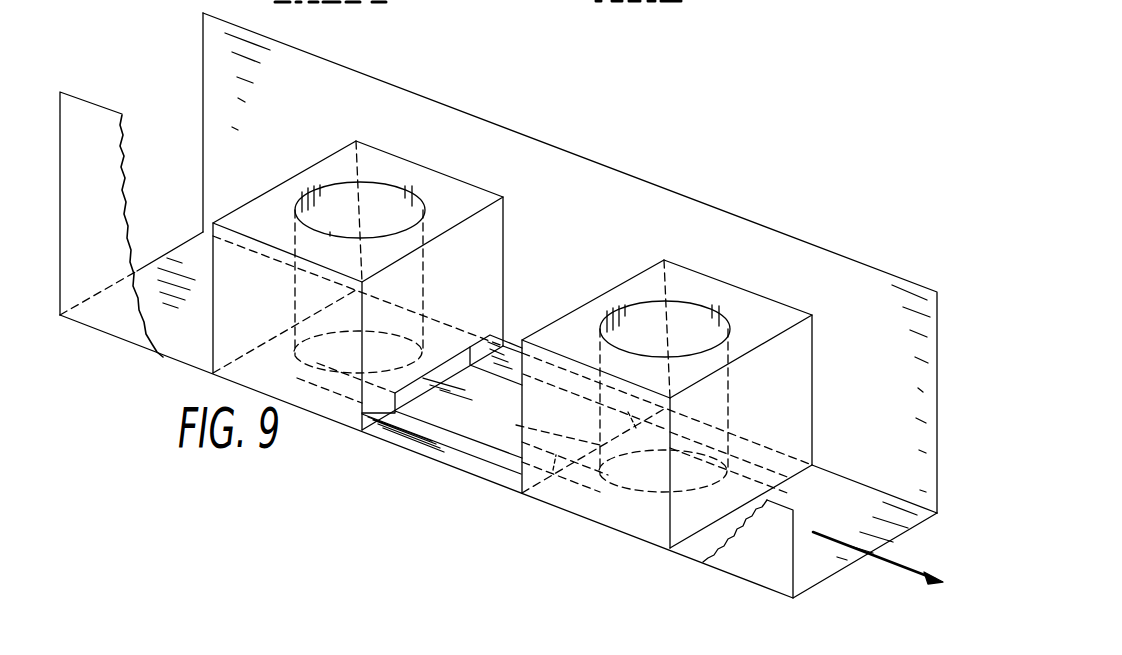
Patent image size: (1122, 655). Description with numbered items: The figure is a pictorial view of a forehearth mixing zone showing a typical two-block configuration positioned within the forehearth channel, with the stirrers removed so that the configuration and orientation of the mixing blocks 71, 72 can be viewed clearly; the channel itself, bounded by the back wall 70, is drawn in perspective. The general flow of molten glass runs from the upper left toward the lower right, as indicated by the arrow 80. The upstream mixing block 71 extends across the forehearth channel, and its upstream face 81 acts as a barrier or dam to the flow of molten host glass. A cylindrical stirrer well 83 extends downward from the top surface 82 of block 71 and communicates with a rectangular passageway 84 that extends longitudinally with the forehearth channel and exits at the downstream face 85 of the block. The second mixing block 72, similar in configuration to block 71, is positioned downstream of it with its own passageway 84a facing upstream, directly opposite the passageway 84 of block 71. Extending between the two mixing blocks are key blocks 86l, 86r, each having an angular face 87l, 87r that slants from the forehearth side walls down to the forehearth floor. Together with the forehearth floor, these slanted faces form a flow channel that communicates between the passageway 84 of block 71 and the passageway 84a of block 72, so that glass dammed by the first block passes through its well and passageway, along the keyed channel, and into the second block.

The back wall 70 is at (897, 378).
The mixing block 71 is at (382, 261).
The mixing block 72 is at (711, 272).
The arrow 80 is at (847, 503).
The upstream face 81 is at (284, 188).
The top surface 82 is at (345, 162).
The cylindrical stirrer well 83 is at (381, 188).
The rectangular passageway 84 is at (445, 389).
The passageway 84a is at (455, 408).
The downstream face 85 is at (468, 178).
The key block 86l is at (500, 352).
The key block 86r is at (462, 460).
The angular face 87l is at (506, 336).
The angular face 87r is at (424, 426).